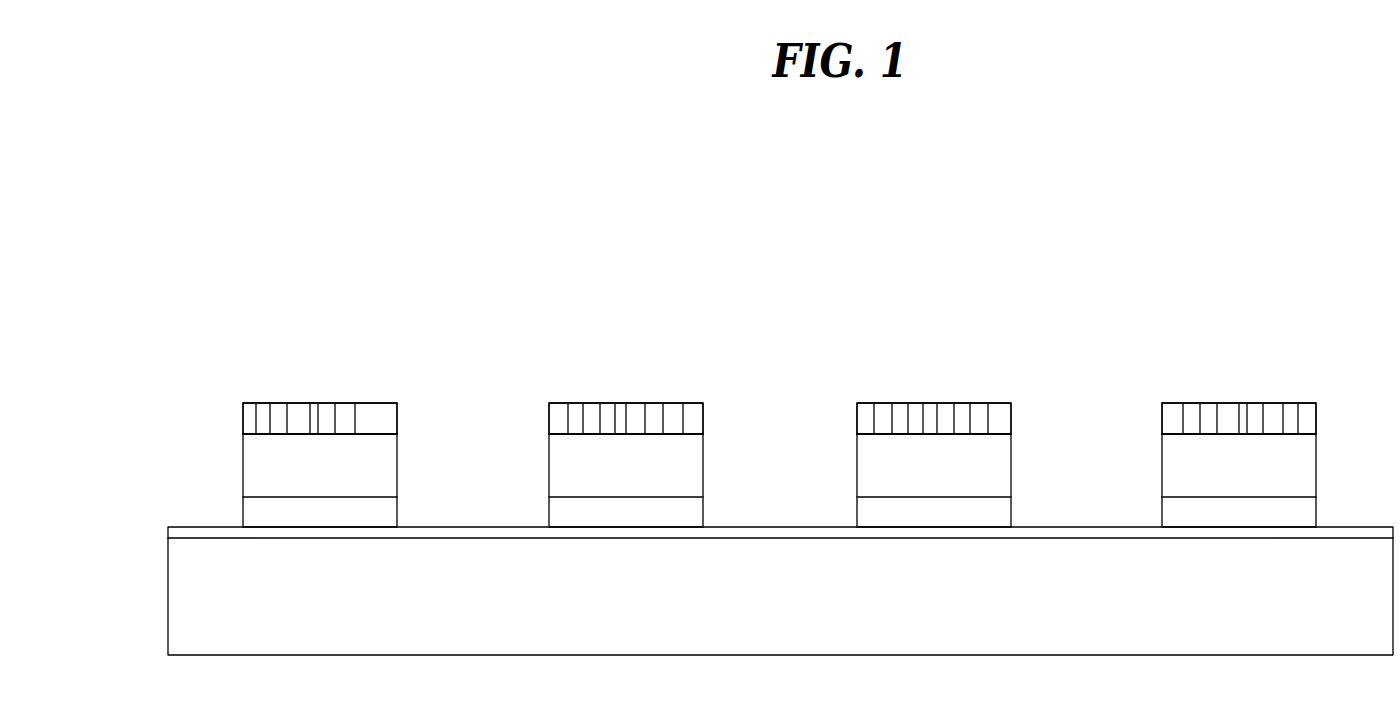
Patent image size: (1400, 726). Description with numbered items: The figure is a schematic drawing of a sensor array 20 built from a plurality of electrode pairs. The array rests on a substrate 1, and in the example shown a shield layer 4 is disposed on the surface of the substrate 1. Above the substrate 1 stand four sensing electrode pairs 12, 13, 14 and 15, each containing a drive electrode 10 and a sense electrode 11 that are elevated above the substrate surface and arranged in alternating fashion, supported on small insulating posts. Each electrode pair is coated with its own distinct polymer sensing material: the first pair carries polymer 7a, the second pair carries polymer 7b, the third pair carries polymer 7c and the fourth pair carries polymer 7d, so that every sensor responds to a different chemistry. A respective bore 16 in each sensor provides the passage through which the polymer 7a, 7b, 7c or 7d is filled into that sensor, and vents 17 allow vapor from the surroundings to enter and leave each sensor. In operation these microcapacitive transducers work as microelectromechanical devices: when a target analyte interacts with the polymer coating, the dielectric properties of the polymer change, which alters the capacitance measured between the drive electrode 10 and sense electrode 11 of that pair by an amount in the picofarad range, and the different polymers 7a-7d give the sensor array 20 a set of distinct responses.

The substrate 1 is at (190, 602).
The shield layer 4 is at (207, 527).
The polymer sensing material 7a is at (260, 468).
The polymer sensing material 7b is at (567, 467).
The polymer sensing material 7c is at (862, 467).
The polymer sensing material 7d is at (1168, 467).
The drive electrode 10 is at (385, 422).
The sense electrode 11 is at (383, 512).
The sensing electrode pair 12 is at (284, 393).
The sensing electrode pair 13 is at (595, 395).
The sensing electrode pair 14 is at (903, 397).
The sensing electrode pair 15 is at (1208, 398).
The bore 16 is at (323, 410).
The vent 17 is at (243, 416).
The sensor array 20 is at (428, 303).